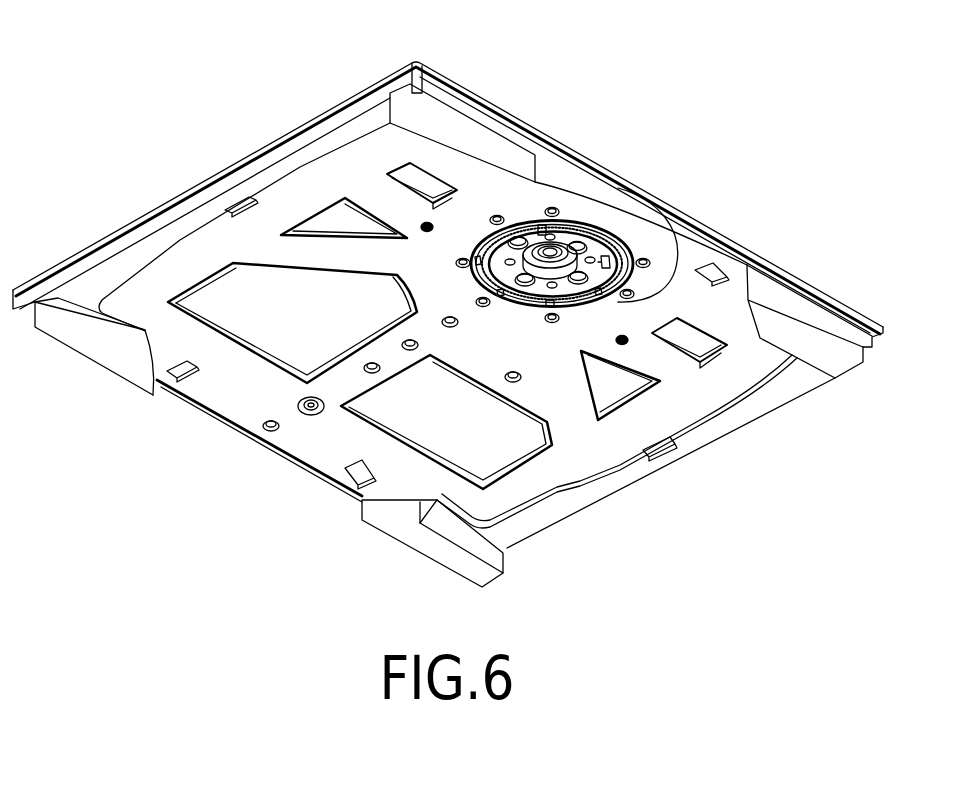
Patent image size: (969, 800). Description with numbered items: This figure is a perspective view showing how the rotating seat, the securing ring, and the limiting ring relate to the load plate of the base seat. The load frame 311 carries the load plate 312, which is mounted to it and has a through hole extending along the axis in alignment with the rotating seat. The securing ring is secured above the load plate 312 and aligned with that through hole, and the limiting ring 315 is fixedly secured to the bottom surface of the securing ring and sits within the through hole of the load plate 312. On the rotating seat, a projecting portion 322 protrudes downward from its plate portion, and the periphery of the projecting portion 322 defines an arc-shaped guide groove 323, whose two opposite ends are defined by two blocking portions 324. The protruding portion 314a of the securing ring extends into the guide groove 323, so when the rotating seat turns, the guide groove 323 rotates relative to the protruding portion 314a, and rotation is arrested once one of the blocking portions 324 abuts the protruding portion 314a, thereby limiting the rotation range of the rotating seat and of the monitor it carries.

The load frame 311 is at (352, 98).
The load plate 312 is at (290, 203).
The projecting portion 322 is at (533, 230).
The guide groove 323 is at (607, 242).
The protruding portion 314a is at (589, 236).
The blocking portions 324 is at (542, 227).
The limiting ring 315 is at (745, 263).